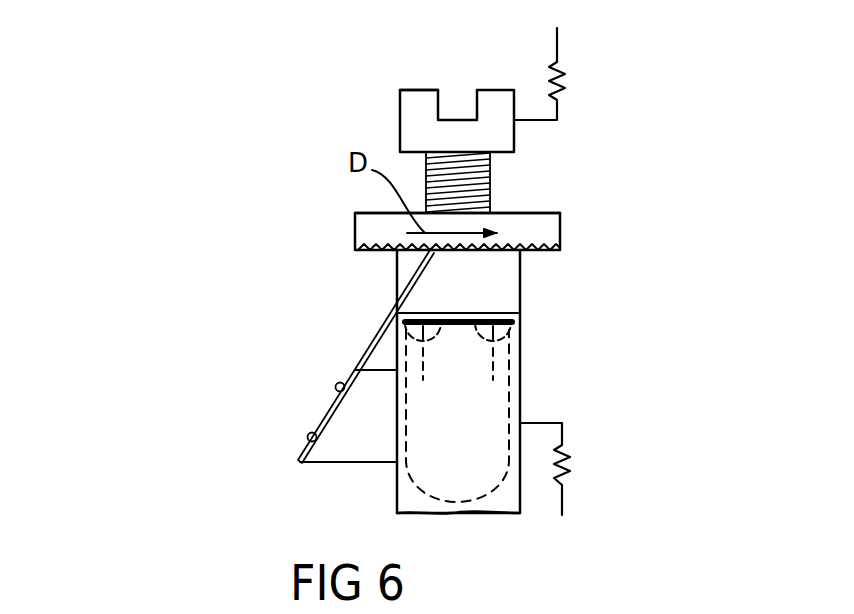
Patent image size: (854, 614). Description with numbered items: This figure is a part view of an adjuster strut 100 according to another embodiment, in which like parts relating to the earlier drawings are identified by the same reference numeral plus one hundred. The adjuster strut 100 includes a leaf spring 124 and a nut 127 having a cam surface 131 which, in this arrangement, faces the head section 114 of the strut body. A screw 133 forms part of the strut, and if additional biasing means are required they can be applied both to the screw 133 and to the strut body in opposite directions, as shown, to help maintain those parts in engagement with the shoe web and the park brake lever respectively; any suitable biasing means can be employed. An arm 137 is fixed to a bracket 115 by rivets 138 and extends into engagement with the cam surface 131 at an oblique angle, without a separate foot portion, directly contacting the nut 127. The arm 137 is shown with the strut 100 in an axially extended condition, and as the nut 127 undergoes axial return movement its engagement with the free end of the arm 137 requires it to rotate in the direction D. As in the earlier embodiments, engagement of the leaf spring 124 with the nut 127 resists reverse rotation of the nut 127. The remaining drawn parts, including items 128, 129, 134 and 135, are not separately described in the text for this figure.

The adjuster strut 100 is at (612, 118).
The head section 114 is at (500, 513).
The bracket 115 is at (520, 398).
The leaf spring 124 is at (520, 318).
The nut 127 is at (540, 228).
The toothed slide plate 128 is at (355, 228).
The cylinder body 129 is at (492, 282).
The cam surface 131 is at (540, 253).
The screw 133 is at (358, 112).
The threaded screw 134 is at (460, 182).
The knob head 135 is at (418, 91).
The arm 137 is at (378, 338).
The rivets 138 is at (336, 387).